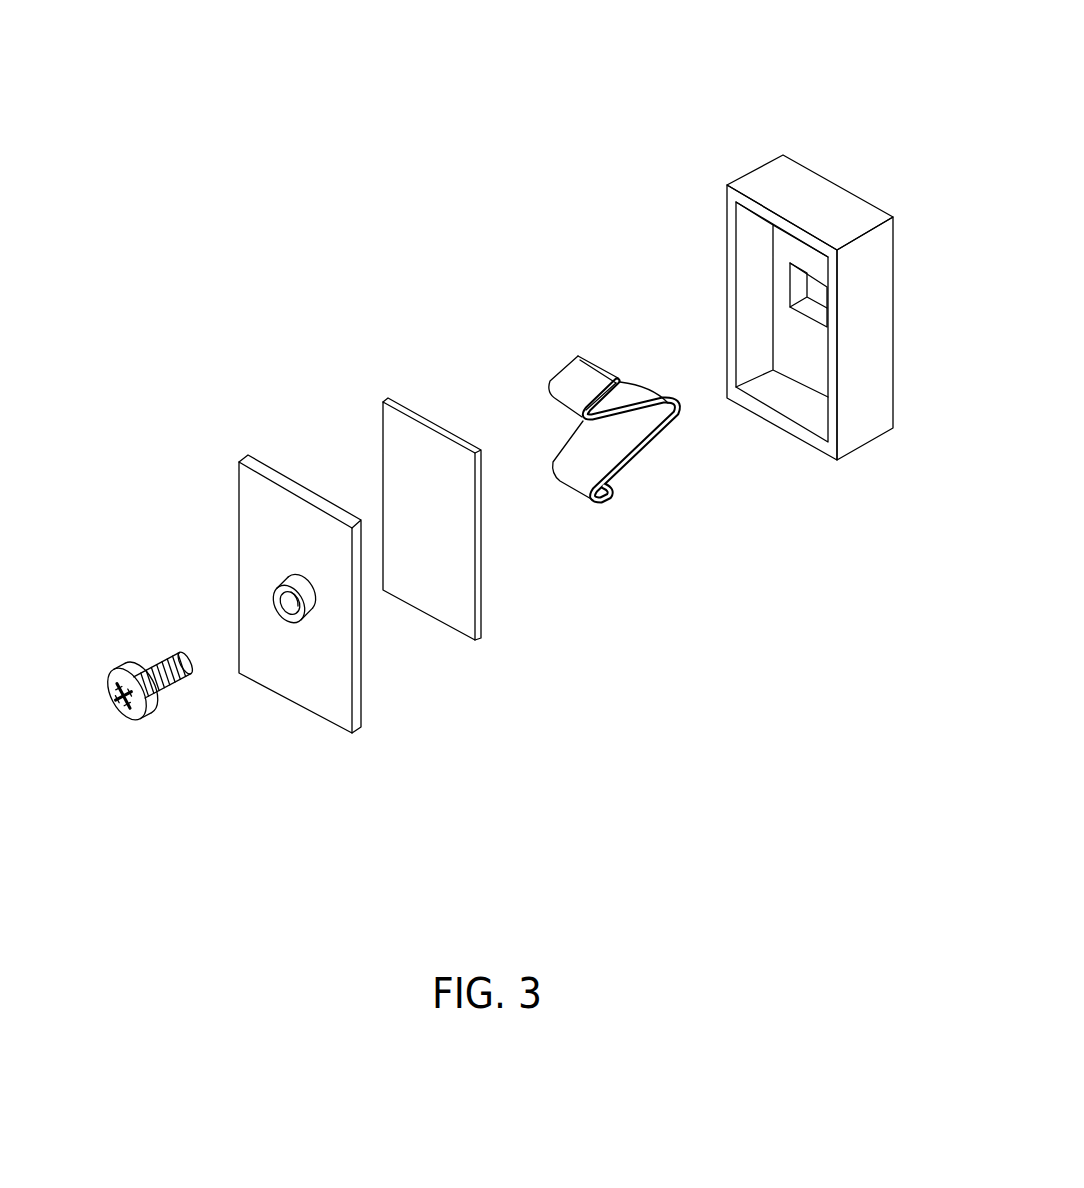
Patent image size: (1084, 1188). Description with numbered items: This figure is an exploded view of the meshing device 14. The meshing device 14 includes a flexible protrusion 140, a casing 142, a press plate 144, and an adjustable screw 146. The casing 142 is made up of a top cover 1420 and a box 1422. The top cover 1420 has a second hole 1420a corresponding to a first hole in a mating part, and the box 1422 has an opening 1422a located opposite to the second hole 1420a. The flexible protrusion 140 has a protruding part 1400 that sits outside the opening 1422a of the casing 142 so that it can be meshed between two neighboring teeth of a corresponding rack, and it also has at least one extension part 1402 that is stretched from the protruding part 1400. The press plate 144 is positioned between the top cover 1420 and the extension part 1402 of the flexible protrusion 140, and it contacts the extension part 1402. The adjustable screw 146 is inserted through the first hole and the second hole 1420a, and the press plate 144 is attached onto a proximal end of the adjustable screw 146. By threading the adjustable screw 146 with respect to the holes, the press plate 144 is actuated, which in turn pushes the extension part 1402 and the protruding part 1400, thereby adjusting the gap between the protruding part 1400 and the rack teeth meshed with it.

The meshing device 14 is at (470, 100).
The flexible protrusion 140 is at (620, 335).
The protruding part 1400 is at (677, 430).
The extension part 1402 is at (577, 355).
The casing 142 is at (729, 839).
The top cover 1420 is at (387, 751).
The second hole 1420a is at (285, 596).
The box 1422 is at (805, 490).
The opening 1422a is at (800, 288).
The press plate 144 is at (407, 410).
The adjustable screw 146 is at (134, 672).